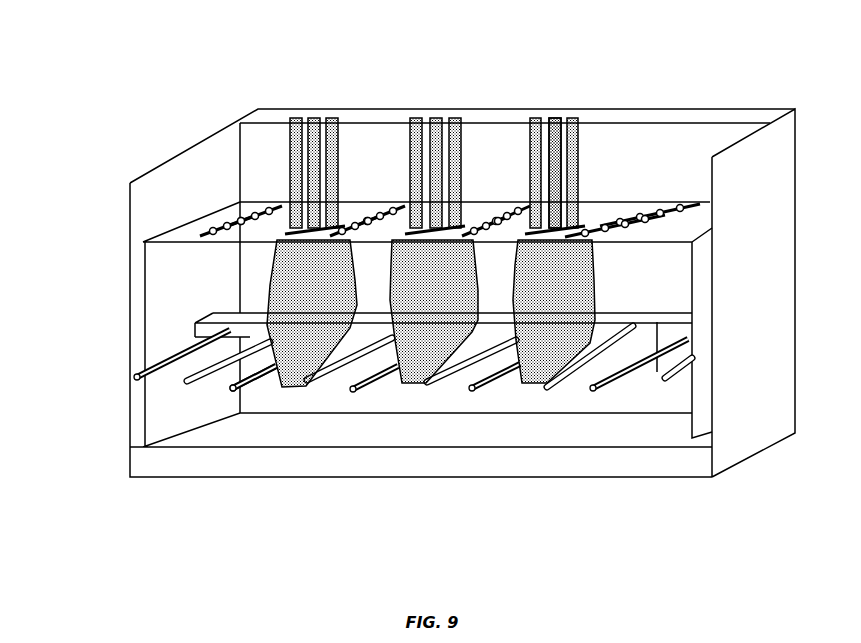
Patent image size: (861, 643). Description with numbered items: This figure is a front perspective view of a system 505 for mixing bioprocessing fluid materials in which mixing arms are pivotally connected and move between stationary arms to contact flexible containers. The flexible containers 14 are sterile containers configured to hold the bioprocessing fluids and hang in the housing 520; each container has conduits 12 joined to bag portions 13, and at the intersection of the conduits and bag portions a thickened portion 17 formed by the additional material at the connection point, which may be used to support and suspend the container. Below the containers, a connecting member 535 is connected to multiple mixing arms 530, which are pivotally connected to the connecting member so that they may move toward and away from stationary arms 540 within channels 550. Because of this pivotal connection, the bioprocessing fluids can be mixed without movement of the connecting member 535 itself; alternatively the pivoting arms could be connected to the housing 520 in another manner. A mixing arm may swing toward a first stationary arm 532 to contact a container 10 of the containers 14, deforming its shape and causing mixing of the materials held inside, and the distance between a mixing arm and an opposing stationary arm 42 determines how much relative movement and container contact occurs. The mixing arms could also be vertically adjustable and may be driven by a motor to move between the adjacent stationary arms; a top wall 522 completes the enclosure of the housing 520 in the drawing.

The system for mixing bioprocessing fluid materials 505 is at (100, 502).
The housing 520 is at (775, 245).
The top wall 522 is at (653, 162).
The thickened portion 17 is at (225, 223).
The connecting member 535 is at (213, 313).
The flexible containers 14 is at (335, 262).
The conduits 12 is at (570, 153).
The container 10 is at (300, 304).
The bag portions 13 is at (422, 304).
The mixing arms 530 is at (258, 336).
The stationary arm 42 is at (233, 389).
The first stationary arm 532 is at (307, 384).
The stationary arms 540 is at (352, 392).
The channels 550 is at (453, 392).